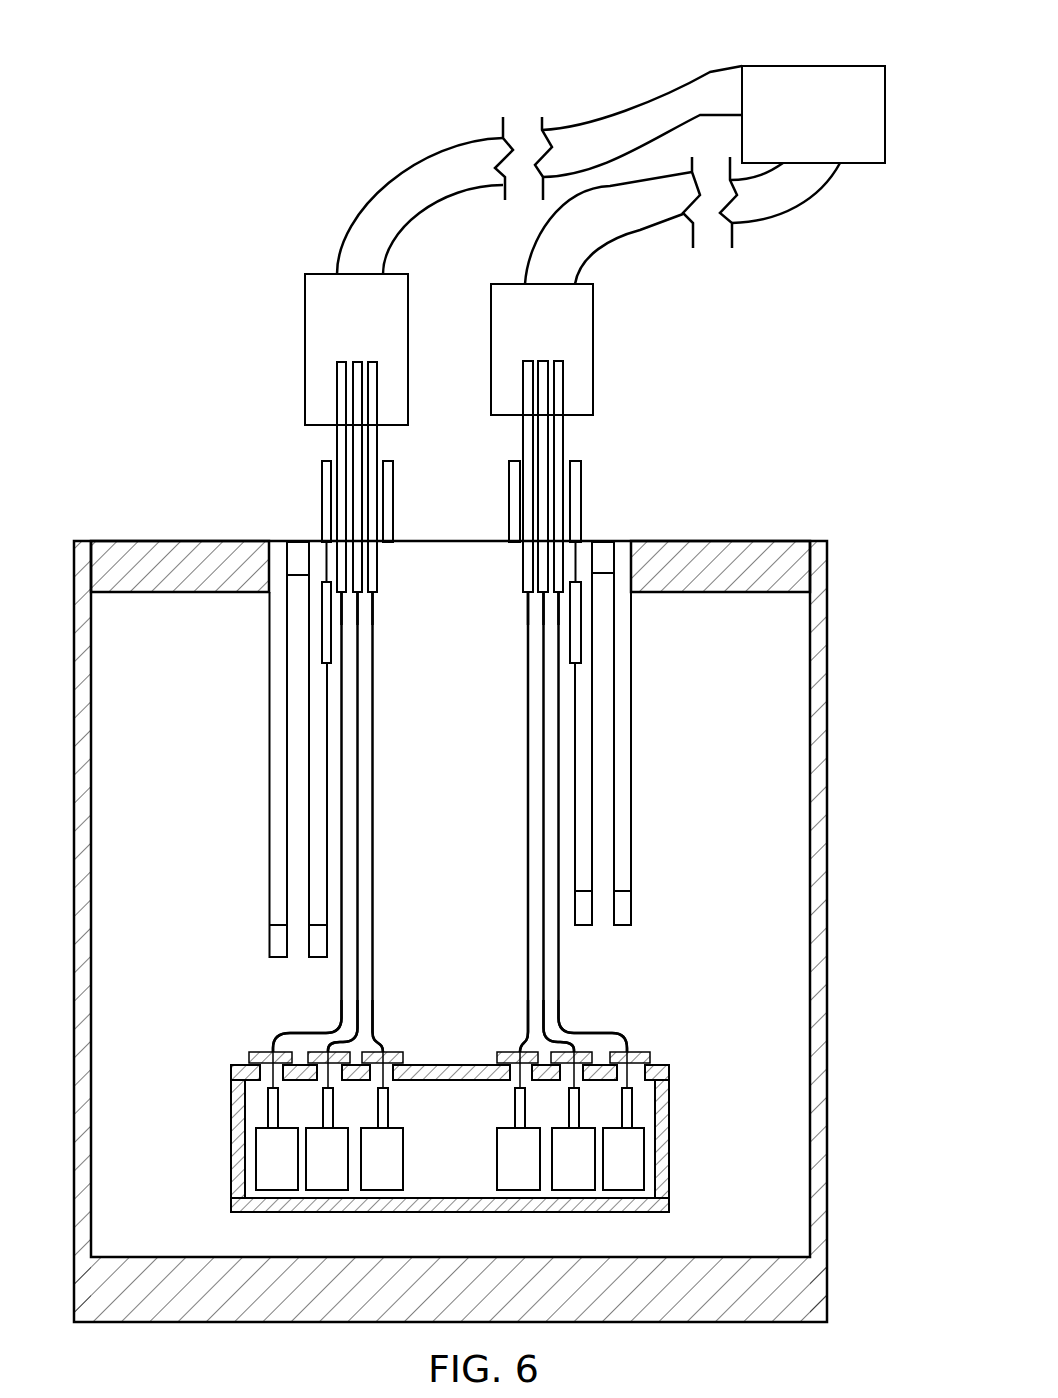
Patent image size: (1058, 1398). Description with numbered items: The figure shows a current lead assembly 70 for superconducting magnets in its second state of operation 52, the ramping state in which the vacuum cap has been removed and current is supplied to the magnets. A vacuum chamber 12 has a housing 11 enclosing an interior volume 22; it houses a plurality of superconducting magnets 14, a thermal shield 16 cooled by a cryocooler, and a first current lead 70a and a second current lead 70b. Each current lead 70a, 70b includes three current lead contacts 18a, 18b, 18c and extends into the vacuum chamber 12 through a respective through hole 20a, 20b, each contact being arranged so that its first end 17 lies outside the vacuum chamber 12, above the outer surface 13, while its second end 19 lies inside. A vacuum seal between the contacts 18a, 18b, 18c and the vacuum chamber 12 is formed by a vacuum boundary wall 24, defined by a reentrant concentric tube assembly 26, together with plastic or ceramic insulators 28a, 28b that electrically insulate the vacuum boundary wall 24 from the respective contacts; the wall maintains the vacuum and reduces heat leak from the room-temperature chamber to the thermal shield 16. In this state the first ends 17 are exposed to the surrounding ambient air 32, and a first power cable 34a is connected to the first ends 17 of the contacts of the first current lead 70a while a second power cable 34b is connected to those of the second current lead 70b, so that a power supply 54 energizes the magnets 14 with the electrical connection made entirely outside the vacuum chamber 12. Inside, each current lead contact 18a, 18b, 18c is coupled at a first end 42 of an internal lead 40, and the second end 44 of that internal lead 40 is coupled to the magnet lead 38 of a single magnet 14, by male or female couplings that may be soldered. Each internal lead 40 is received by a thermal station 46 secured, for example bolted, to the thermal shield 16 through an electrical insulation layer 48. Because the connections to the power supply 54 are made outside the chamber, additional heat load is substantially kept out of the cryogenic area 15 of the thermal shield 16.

The housing 11 is at (831, 690).
The vacuum chamber 12 is at (797, 541).
The outer surface 13 is at (170, 541).
The superconducting magnet 14 is at (264, 1173).
The cryogenic area 15 is at (460, 1123).
The thermal shield 16 is at (656, 1065).
The first end 17 is at (372, 361).
The first current lead contact 18a is at (341, 398).
The second current lead contact 18b is at (358, 416).
The third current lead contact 18c is at (374, 378).
The second end 19 is at (558, 601).
The through hole 20a is at (316, 538).
The through hole 20b is at (590, 533).
The interior volume 22 is at (748, 658).
The vacuum boundary wall 24 is at (632, 803).
The reentrant concentric tube assembly 26 is at (270, 833).
The insulator 28a is at (393, 483).
The insulator 28b is at (509, 518).
The ambient air 32 is at (873, 249).
The first power cable 34a is at (357, 212).
The second power cable 34b is at (620, 243).
The magnet lead 38 is at (268, 1112).
The internal lead 40 is at (374, 983).
The first end 42 is at (374, 658).
The second end 44 is at (527, 1002).
The thermal station 46 is at (262, 1050).
The electrical insulation layer 48 is at (250, 1058).
The second state of operation 52 is at (848, 303).
The power supply 54 is at (818, 66).
The current lead assembly 70 is at (201, 190).
The first current lead 70a is at (303, 440).
The second current lead 70b is at (588, 446).